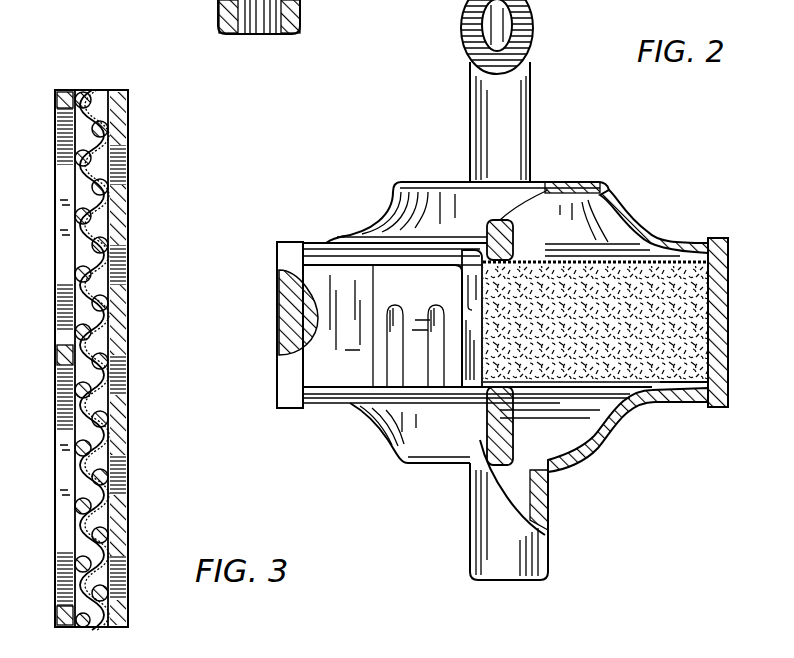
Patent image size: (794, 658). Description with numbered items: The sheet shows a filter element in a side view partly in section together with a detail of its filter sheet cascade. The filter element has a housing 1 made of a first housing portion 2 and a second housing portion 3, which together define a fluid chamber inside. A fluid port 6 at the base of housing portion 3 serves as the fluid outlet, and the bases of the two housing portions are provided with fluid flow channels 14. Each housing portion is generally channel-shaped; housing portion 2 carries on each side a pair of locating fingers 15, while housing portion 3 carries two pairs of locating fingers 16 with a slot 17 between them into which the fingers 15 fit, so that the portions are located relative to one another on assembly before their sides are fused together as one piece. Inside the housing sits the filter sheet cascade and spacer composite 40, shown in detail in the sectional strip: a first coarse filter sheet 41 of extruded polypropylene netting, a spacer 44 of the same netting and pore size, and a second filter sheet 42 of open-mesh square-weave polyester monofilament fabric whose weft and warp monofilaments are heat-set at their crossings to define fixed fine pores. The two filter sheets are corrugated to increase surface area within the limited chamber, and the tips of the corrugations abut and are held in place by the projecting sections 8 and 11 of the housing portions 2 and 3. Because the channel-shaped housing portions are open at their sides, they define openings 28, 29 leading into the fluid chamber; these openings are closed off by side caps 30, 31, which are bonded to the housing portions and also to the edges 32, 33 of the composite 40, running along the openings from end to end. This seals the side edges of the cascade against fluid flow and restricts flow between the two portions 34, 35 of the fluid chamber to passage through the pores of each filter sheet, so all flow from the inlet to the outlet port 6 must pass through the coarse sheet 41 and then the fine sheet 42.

In FIG. 2, the housing 1 is at (508, 290).
In FIG. 2, the first housing portion 2 is at (690, 245).
In FIG. 2, the second housing portion 3 is at (672, 397).
In FIG. 2, the fluid port 6 is at (268, 35).
In FIG. 2, the projecting section 8 is at (512, 230).
In FIG. 2, the projecting section 11 is at (516, 418).
In FIG. 2, the fluid flow channels 14 is at (587, 392).
In FIG. 2, the locating fingers 15 is at (470, 297).
In FIG. 2, the locating fingers 16 is at (378, 343).
In FIG. 2, the slot 17 is at (472, 347).
In FIG. 2, the opening 28 is at (307, 270).
In FIG. 2, the opening 29 is at (699, 378).
In FIG. 2, the side cap 30 is at (288, 410).
In FIG. 2, the side cap 31 is at (722, 408).
In FIG. 2, the edge of filter sheet cascade 32 is at (300, 318).
In FIG. 2, the edge of filter sheet cascade 33 is at (690, 322).
In FIG. 2, the portion of fluid chamber 34 is at (580, 242).
In FIG. 2, the portion of fluid chamber 35 is at (588, 432).
In FIG. 2, the filter sheet cascade and spacer composite 40 is at (600, 317).
In FIG. 3, the filter sheet cascade and spacer composite 40 is at (195, 210).
In FIG. 3, the first coarse filter sheet 41 is at (60, 318).
In FIG. 3, the second filter sheet 42 is at (97, 90).
In FIG. 3, the spacer 44 is at (118, 90).